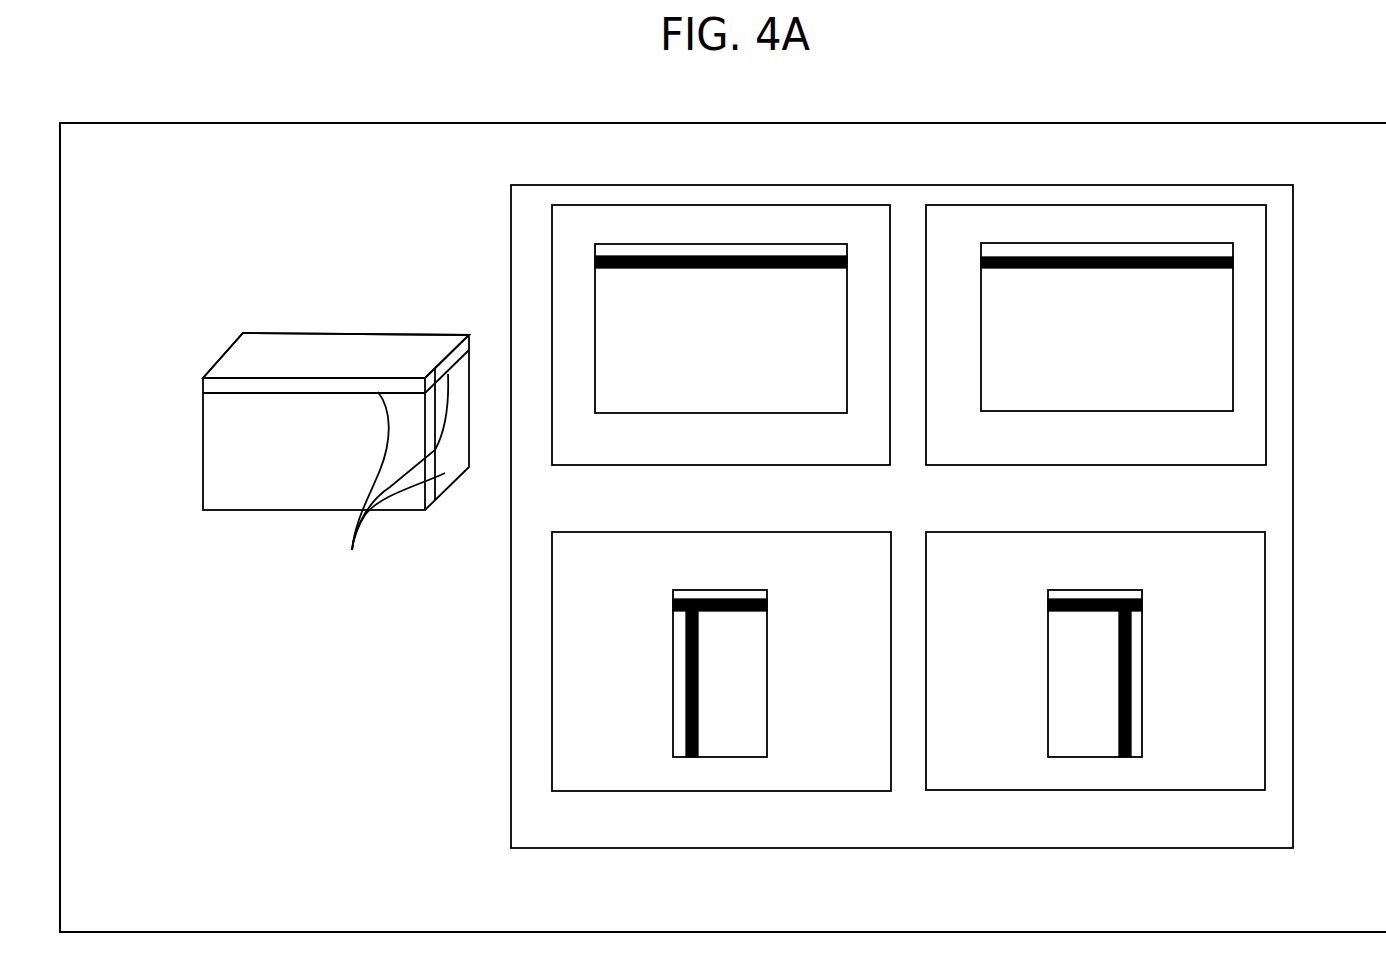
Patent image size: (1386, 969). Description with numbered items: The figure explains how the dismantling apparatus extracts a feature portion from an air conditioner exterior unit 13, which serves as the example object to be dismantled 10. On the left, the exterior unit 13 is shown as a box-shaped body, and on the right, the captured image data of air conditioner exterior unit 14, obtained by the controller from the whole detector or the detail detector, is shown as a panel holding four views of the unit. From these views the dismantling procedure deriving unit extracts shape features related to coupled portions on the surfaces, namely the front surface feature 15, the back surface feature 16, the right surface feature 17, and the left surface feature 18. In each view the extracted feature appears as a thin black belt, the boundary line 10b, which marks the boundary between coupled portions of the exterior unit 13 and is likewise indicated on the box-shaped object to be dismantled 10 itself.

The object to be dismantled 10 is at (266, 514).
The boundary line 10b is at (1165, 578).
The air conditioner exterior unit 13 is at (350, 343).
The captured image data of air conditioner exterior unit 14 is at (511, 272).
The front surface feature 15 is at (797, 413).
The back surface feature 16 is at (1183, 411).
The right surface feature 17 is at (767, 732).
The left surface feature 18 is at (1142, 732).